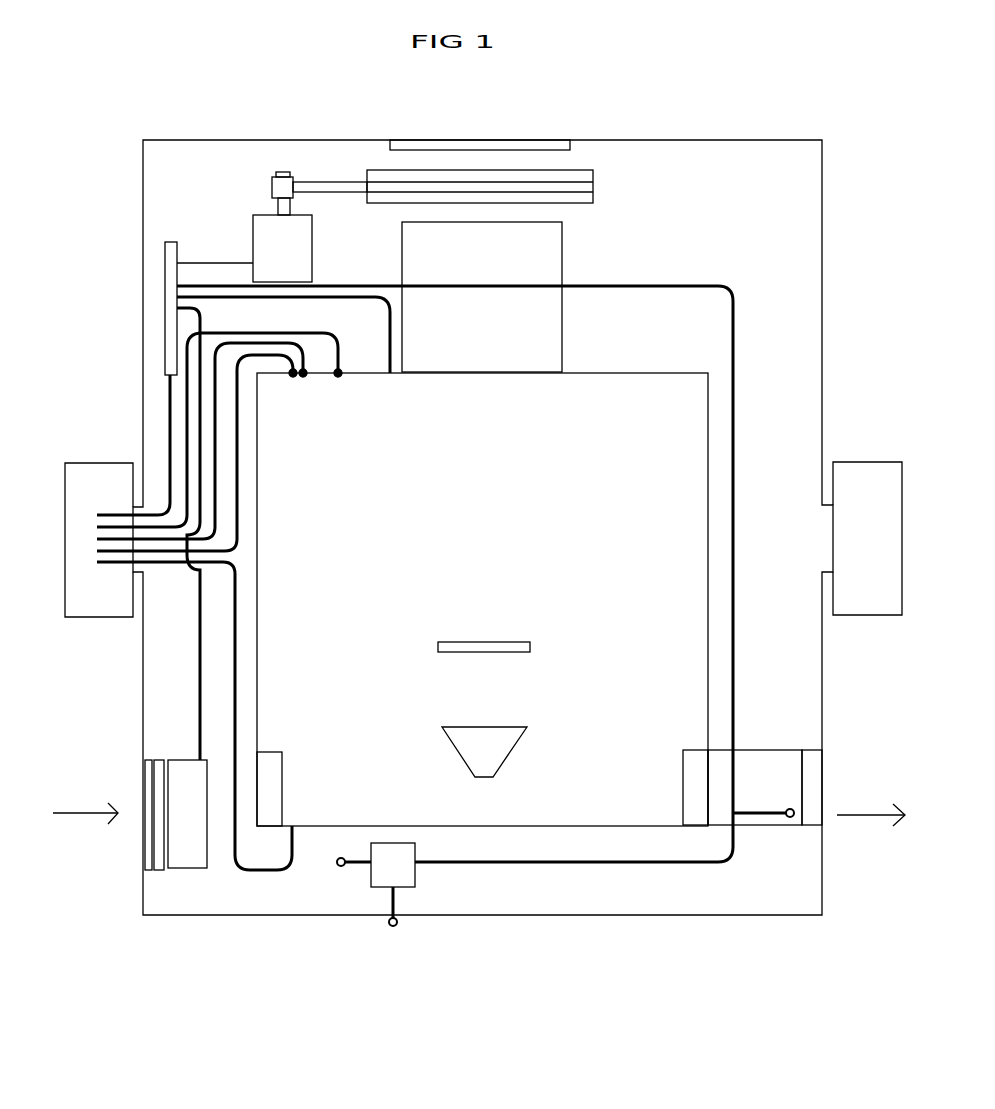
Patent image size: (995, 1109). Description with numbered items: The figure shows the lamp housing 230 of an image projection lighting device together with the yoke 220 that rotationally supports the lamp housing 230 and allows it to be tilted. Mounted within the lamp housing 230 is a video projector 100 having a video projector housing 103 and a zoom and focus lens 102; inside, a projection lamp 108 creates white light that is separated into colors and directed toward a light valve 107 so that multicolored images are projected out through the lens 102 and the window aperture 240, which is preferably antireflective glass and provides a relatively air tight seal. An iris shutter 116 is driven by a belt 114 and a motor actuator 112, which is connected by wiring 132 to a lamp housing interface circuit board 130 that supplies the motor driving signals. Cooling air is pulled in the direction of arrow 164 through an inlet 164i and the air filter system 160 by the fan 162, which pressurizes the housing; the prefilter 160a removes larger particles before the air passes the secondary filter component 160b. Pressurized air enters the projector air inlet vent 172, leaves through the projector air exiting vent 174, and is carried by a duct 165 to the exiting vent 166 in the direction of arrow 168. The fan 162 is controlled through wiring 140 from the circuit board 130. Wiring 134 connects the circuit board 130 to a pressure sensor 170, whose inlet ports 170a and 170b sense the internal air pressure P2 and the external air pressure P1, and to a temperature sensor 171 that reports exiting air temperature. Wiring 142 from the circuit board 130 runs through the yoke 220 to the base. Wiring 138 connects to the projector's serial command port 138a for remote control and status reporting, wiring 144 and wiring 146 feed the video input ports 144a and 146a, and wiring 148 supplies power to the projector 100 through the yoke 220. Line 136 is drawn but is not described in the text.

The video projector 100 is at (492, 472).
The zoom and focus lens 102 is at (495, 340).
The video projector housing 103 is at (605, 368).
The light valve 107 is at (540, 642).
The projection lamp 108 is at (528, 727).
The motor actuator 112 is at (248, 210).
The belt 114 is at (333, 195).
The iris shutter 116 is at (597, 198).
The lamp housing interface circuit board 130 is at (404, 538).
The wiring 132 is at (217, 257).
The wiring 134 is at (598, 277).
The gas line 136 is at (342, 300).
The wiring 138 is at (255, 328).
The serial command port 138a is at (340, 377).
The wiring 140 is at (195, 652).
The wiring 142 is at (167, 412).
The wiring 144 is at (237, 490).
The video input port 144a is at (292, 377).
The wiring 146 is at (217, 445).
The video input port 146a is at (303, 377).
The wiring 148 is at (238, 612).
The air filter system 160 is at (146, 811).
The prefilter 160a is at (142, 837).
The secondary filter component 160b is at (160, 872).
The fan 162 is at (204, 844).
The arrow 164 is at (83, 815).
The inlet 164i is at (138, 787).
The duct 165 is at (767, 743).
The exiting vent 166 is at (815, 743).
The arrow 168 is at (878, 820).
The sensor 170 is at (409, 875).
The inlet port 170a is at (338, 860).
The inlet port 170b is at (397, 925).
The temperature sensor 171 is at (787, 818).
The air inlet vent 172 is at (297, 762).
The projector air exiting vent 174 is at (675, 762).
The yoke 220 is at (108, 625).
The lamp housing 230 is at (183, 132).
The window aperture 240 is at (545, 132).
The air pressure outside the housing P1 is at (379, 971).
The air pressure within the housing P2 is at (292, 907).